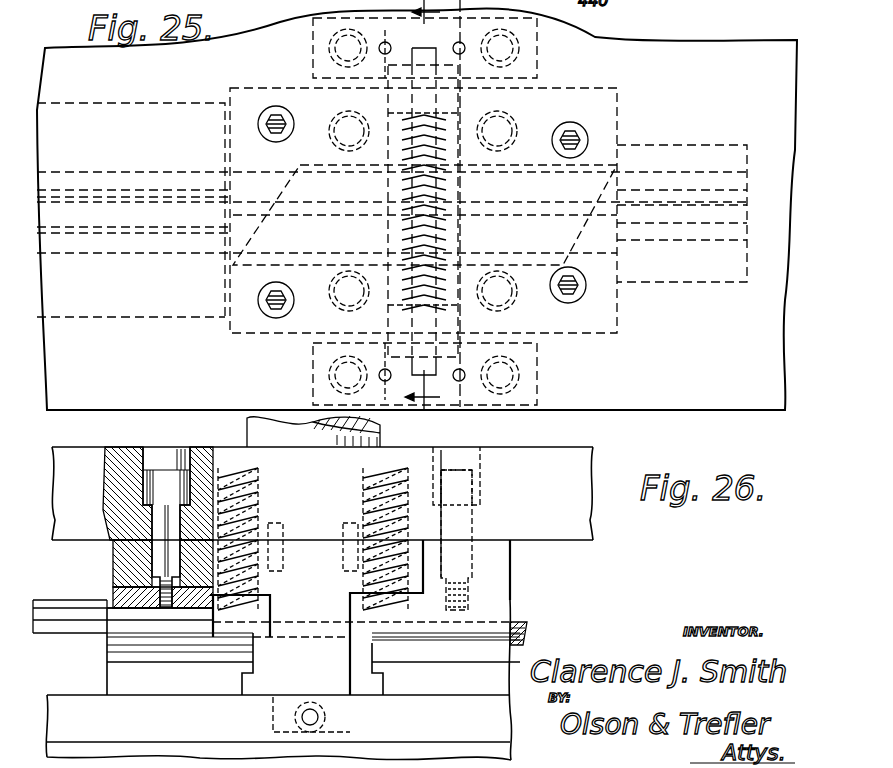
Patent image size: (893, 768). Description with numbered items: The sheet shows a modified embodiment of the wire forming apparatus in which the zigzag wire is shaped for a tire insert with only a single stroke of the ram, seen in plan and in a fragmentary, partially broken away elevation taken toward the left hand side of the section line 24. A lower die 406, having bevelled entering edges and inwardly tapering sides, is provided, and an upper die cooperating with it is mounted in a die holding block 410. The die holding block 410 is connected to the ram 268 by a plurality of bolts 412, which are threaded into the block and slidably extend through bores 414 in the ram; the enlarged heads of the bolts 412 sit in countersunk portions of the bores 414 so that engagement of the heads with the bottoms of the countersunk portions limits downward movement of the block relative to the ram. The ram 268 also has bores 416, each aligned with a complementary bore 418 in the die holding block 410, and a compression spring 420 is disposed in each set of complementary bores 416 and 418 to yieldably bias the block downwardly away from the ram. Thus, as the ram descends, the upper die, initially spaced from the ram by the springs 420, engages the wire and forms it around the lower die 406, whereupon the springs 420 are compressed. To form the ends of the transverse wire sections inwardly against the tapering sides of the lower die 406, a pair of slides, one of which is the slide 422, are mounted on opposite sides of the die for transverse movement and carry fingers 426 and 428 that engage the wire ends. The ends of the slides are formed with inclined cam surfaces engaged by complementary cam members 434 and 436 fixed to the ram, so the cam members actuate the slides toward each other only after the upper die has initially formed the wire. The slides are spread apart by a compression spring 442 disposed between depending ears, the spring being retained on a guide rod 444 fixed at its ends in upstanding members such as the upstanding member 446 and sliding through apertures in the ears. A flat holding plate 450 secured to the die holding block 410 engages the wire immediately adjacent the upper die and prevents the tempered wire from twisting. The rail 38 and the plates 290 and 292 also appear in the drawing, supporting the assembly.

In FIG. 25, the section line 24- 24 is at (434, 205).
In FIG. 26, the guide rail 38 is at (68, 617).
In FIG. 26, the ram 268 is at (565, 445).
In FIG. 25, the slide plate edge 290 is at (162, 303).
In FIG. 25, the slide plate 292 is at (155, 107).
In FIG. 26, the lower die 406 is at (585, 615).
In FIG. 26, the die holding block 410 is at (497, 562).
In FIG. 25, the bolts 412 is at (274, 107).
In FIG. 26, the bolts 412 is at (160, 460).
In FIG. 26, the bores 414 is at (473, 531).
In FIG. 26, the bores 416 is at (345, 522).
In FIG. 26, the complementary bore 418 is at (362, 590).
In FIG. 25, the compression spring 420 is at (333, 143).
In FIG. 26, the compression spring 420 is at (224, 468).
In FIG. 26, the slide 422 is at (362, 652).
In FIG. 25, the finger 426 is at (398, 242).
In FIG. 25, the finger 428 is at (400, 189).
In FIG. 25, the cam member 434 is at (457, 362).
In FIG. 26, the cam member 434 is at (327, 678).
In FIG. 25, the cam member 436 is at (537, 73).
In FIG. 25, the compression spring 442 is at (452, 242).
In FIG. 26, the compression spring 442 is at (330, 715).
In FIG. 25, the guide rod 444 is at (452, 189).
In FIG. 26, the upstanding member 446 is at (333, 735).
In FIG. 26, the flat holding plate 450 is at (113, 597).